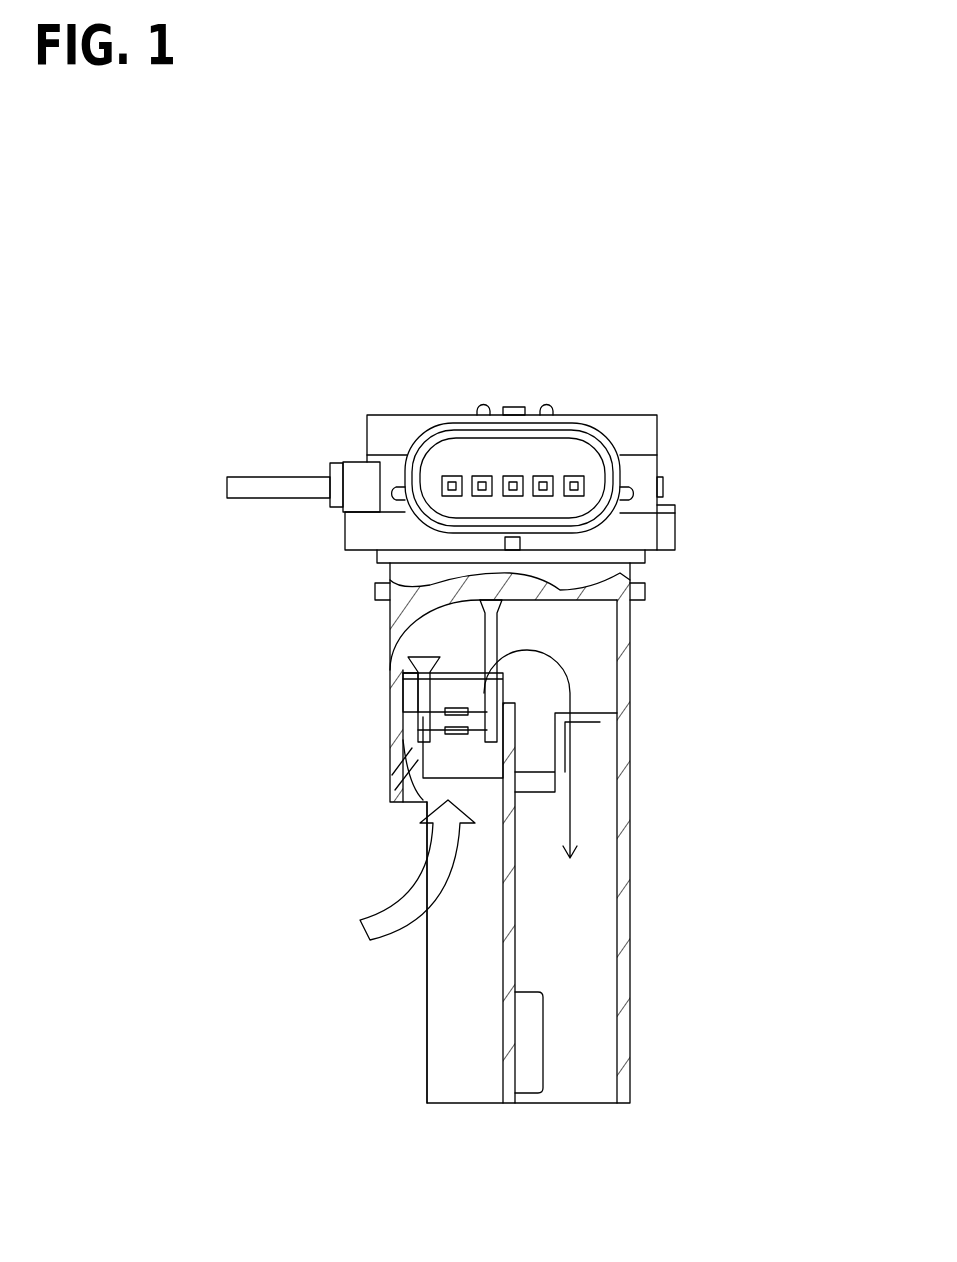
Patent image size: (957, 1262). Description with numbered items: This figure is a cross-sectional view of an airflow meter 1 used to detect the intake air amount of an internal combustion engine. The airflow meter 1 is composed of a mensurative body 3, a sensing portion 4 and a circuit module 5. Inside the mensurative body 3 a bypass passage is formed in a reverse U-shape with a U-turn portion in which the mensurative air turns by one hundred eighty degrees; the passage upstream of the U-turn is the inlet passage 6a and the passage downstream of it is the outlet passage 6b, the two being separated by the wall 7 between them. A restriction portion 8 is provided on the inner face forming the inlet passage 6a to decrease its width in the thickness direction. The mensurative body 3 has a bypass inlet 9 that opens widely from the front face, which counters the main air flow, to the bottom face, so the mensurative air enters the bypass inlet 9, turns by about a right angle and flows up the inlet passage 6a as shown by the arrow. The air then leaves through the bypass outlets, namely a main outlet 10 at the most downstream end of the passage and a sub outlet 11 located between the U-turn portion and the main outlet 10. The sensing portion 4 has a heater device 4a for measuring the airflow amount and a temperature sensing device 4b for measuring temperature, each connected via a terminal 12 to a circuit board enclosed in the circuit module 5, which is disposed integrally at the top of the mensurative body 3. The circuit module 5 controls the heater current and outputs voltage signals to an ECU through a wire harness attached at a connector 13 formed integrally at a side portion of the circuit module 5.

The airflow meter 1 is at (714, 444).
The mensurative body 3 is at (630, 653).
The sensing portion 4 is at (366, 738).
The heater device 4a is at (445, 713).
The temperature sensing device 4b is at (467, 733).
The circuit module 5 is at (635, 420).
The inlet passage 6a is at (455, 965).
The outlet passage 6b is at (600, 913).
The partition wall 7 is at (513, 950).
The restriction portion 8 is at (447, 765).
The bypass inlet 9 is at (423, 848).
The main outlet 10 is at (532, 1080).
The sub outlet 11 is at (600, 722).
The terminal 12 is at (403, 690).
The connector 13 is at (450, 420).